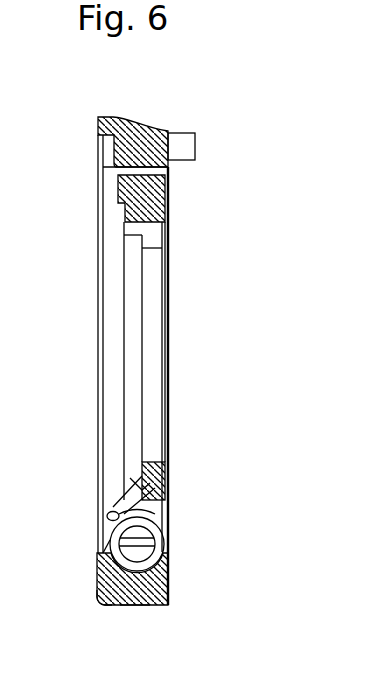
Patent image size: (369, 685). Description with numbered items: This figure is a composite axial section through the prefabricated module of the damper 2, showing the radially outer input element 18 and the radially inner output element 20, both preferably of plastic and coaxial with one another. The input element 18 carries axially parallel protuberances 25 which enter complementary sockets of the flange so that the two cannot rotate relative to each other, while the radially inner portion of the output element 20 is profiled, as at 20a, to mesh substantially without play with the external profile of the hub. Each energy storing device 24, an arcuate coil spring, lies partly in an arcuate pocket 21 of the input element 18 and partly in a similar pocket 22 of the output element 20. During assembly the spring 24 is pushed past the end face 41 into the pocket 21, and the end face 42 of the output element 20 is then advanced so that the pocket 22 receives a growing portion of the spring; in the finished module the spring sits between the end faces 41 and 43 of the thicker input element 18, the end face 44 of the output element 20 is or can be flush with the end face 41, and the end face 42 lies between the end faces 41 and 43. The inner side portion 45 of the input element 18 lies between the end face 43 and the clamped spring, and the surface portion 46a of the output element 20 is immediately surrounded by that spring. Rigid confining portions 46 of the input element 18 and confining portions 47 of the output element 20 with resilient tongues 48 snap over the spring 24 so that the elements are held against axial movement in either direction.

The damper 2 is at (116, 115).
The protuberances 25 is at (183, 140).
The output element 20 is at (157, 186).
The profiled radially inner portion 20a is at (169, 483).
The resilient tongues 48 is at (164, 460).
The end face 44 is at (164, 490).
The end face 42 is at (125, 482).
The confining portions 47 is at (107, 514).
The inner side portion 45 is at (110, 536).
The end face 43 is at (96, 560).
The arcuate pocket 21 is at (98, 564).
The arcuate pocket 22 is at (155, 521).
The surface portion 46a is at (168, 518).
The energy storing device 24 is at (169, 560).
The end face 41 is at (170, 588).
The input element 18 is at (110, 600).
The confining portions 46 is at (137, 606).